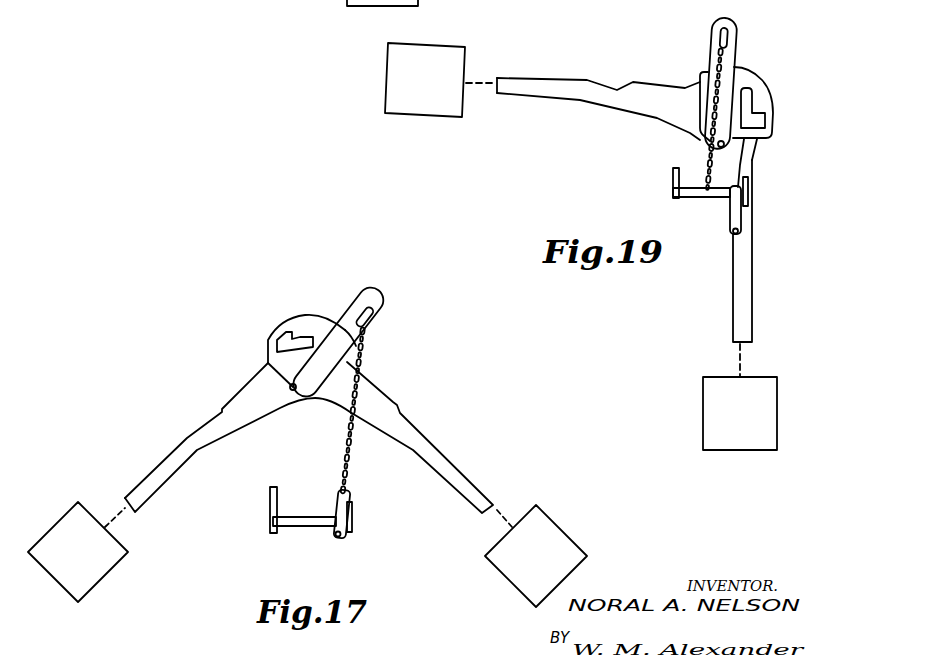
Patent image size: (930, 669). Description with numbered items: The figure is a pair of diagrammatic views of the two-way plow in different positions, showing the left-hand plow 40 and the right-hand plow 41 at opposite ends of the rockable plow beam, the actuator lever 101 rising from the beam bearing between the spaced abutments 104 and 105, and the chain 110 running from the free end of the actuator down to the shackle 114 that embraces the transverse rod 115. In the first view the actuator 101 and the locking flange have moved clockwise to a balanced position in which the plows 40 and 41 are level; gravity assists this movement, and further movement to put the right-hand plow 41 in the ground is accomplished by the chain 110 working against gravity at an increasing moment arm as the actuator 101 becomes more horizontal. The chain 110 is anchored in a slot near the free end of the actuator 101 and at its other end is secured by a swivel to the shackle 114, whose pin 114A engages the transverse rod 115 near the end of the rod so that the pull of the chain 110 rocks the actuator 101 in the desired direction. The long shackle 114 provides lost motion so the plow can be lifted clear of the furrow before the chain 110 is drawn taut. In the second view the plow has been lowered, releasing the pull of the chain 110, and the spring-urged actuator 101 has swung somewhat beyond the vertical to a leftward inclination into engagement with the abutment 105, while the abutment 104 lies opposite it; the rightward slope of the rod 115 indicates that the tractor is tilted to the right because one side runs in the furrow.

In FIG. 19, the left-hand plow 40 is at (437, 117).
In FIG. 17, the left-hand plow 40 is at (102, 580).
In FIG. 19, the right-hand plow 41 is at (703, 400).
In FIG. 17, the right-hand plow 41 is at (517, 590).
In FIG. 19, the actuator lever 101 is at (710, 32).
In FIG. 17, the actuator lever 101 is at (352, 303).
In FIG. 19, the abutment 104 is at (768, 138).
In FIG. 17, the abutment 104 is at (366, 352).
In FIG. 19, the abutment 105 is at (705, 95).
In FIG. 17, the abutment 105 is at (267, 350).
In FIG. 19, the flexible member 110 is at (717, 67).
In FIG. 17, the flexible member 110 is at (346, 440).
In FIG. 19, the shackle 114 is at (741, 210).
In FIG. 17, the shackle 114 is at (338, 495).
In FIG. 19, the pin 114A is at (737, 234).
In FIG. 17, the pin 114A is at (335, 535).
In FIG. 19, the transverse rod 115 is at (688, 197).
In FIG. 17, the transverse rod 115 is at (353, 523).